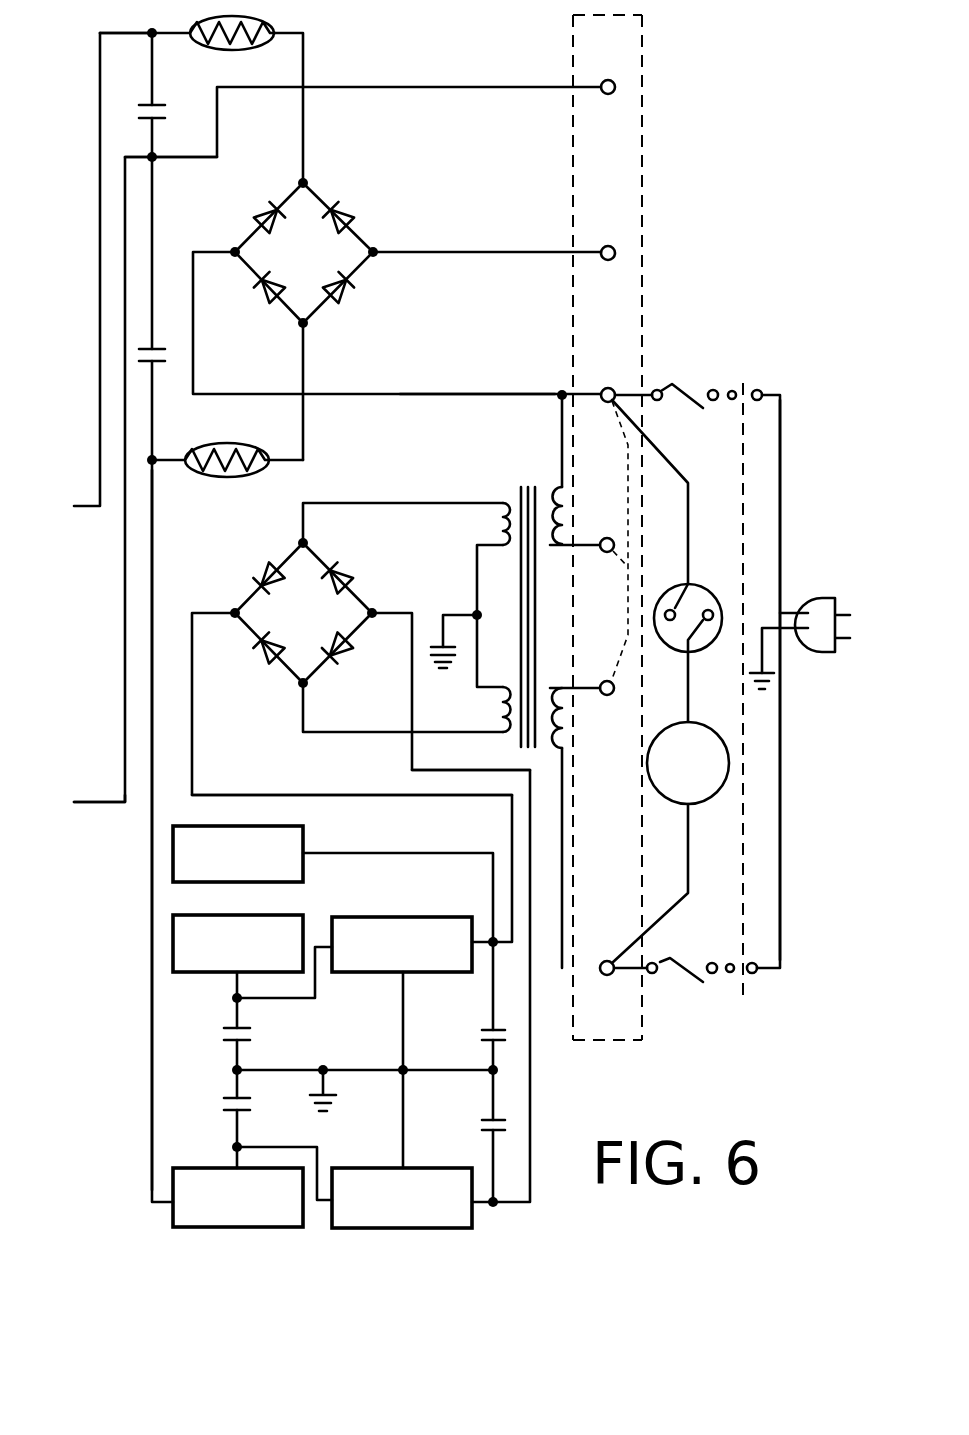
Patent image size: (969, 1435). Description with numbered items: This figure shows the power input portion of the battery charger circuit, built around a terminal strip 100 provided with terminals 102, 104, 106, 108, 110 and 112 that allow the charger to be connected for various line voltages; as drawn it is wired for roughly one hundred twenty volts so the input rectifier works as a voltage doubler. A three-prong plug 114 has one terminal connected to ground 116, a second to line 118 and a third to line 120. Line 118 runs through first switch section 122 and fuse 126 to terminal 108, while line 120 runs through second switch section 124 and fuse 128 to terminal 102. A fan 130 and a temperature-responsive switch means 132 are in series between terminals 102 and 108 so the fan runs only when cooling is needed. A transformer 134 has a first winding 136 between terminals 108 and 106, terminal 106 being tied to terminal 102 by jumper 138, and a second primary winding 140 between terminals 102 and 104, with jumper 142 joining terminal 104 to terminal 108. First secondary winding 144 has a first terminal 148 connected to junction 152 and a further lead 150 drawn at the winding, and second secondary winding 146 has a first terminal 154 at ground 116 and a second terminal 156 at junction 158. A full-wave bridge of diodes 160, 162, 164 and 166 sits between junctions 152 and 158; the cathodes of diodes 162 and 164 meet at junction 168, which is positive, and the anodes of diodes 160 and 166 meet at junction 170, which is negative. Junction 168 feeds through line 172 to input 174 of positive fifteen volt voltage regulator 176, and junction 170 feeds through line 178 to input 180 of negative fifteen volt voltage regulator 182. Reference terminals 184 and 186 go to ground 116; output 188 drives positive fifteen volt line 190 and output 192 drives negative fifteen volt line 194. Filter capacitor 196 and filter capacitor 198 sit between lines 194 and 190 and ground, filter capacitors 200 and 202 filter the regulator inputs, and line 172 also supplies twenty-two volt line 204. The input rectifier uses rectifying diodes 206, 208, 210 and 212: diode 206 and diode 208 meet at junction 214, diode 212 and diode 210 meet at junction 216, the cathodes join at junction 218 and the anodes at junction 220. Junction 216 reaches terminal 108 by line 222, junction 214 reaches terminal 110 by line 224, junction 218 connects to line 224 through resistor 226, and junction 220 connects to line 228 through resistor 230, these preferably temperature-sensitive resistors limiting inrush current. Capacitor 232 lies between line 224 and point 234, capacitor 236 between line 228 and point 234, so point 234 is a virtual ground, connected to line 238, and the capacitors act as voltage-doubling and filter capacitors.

The terminal strip 100 is at (605, 1042).
The terminal 102 is at (605, 960).
The terminal 104 is at (605, 680).
The terminal 106 is at (605, 553).
The terminal 108 is at (608, 388).
The terminal 110 is at (615, 253).
The terminal 112 is at (615, 87).
The three-prong plug 114 is at (812, 598).
The ground 116 is at (442, 672).
The line 118 is at (780, 500).
The line 120 is at (783, 860).
The first switch section 122 is at (752, 385).
The second switch section 124 is at (740, 985).
The fuse 126 is at (685, 385).
The fuse 128 is at (672, 963).
The fan 130 is at (700, 805).
The temperature-responsive switch means 132 is at (700, 588).
The transformer 134 is at (528, 487).
The first winding 136 is at (565, 520).
The jumper 138 is at (623, 765).
The second primary winding 140 is at (565, 735).
The jumper 142 is at (570, 488).
The first secondary winding 144 is at (500, 532).
The second secondary winding 146 is at (500, 725).
The first terminal 148 is at (477, 590).
The winding lead 150 is at (445, 503).
The junction 152 is at (308, 555).
The first terminal 154 is at (497, 655).
The second terminal 156 is at (440, 735).
The junction 158 is at (305, 688).
The diode 160 is at (352, 575).
The diode 162 is at (268, 560).
The diode 164 is at (258, 668).
The diode 166 is at (348, 665).
The junction 168 is at (235, 608).
The junction 170 is at (372, 610).
The line 172 is at (222, 795).
The input 174 is at (470, 942).
The positive 15 volt voltage regulator 176 is at (407, 917).
The line 178 is at (410, 772).
The input 180 is at (470, 1168).
The negative 15 volt voltage regulator 182 is at (405, 1168).
The reference terminal 184 is at (403, 975).
The reference terminal 186 is at (405, 1140).
The output 188 is at (330, 940).
The 15 volt line 190 is at (312, 935).
The output 192 is at (335, 1168).
The negative 15 volt line 194 is at (160, 1202).
The filter capacitor 196 is at (222, 1105).
The filter capacitor 198 is at (250, 1034).
The filter capacitor 200 is at (506, 1125).
The filter capacitor 202 is at (485, 1035).
The 22 volt line 204 is at (303, 853).
The rectifying diode 206 is at (358, 213).
The rectifying diode 208 is at (350, 300).
The rectifying diode 210 is at (268, 305).
The rectifying diode 212 is at (258, 205).
The junction 214 is at (376, 262).
The junction 216 is at (235, 258).
The junction 218 is at (312, 178).
The junction 220 is at (306, 328).
The line 222 is at (480, 393).
The line 224 is at (138, 12).
The resistor 226 is at (265, 20).
The line 228 is at (155, 568).
The resistor 230 is at (200, 472).
The capacitor 232 is at (160, 104).
The point 234 is at (152, 157).
The capacitor 236 is at (155, 361).
The line 238 is at (110, 818).